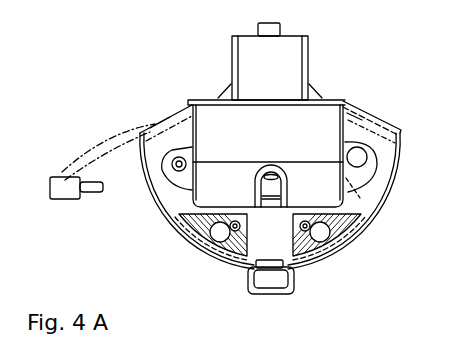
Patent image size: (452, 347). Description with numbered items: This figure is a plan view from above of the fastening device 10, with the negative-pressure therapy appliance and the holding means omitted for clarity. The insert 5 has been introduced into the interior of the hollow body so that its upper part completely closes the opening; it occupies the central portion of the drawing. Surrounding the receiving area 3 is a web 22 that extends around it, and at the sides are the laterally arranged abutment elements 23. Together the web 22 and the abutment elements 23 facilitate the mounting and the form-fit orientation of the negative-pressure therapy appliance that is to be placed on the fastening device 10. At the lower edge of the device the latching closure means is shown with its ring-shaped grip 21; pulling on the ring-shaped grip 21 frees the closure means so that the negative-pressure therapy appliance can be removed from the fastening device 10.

The fastening device 10 is at (118, 62).
The receiving area 3 is at (368, 191).
The insert 5 is at (284, 137).
The ring-shaped grip 21 is at (274, 301).
The web 22 is at (163, 213).
The abutment elements 23 is at (182, 125).